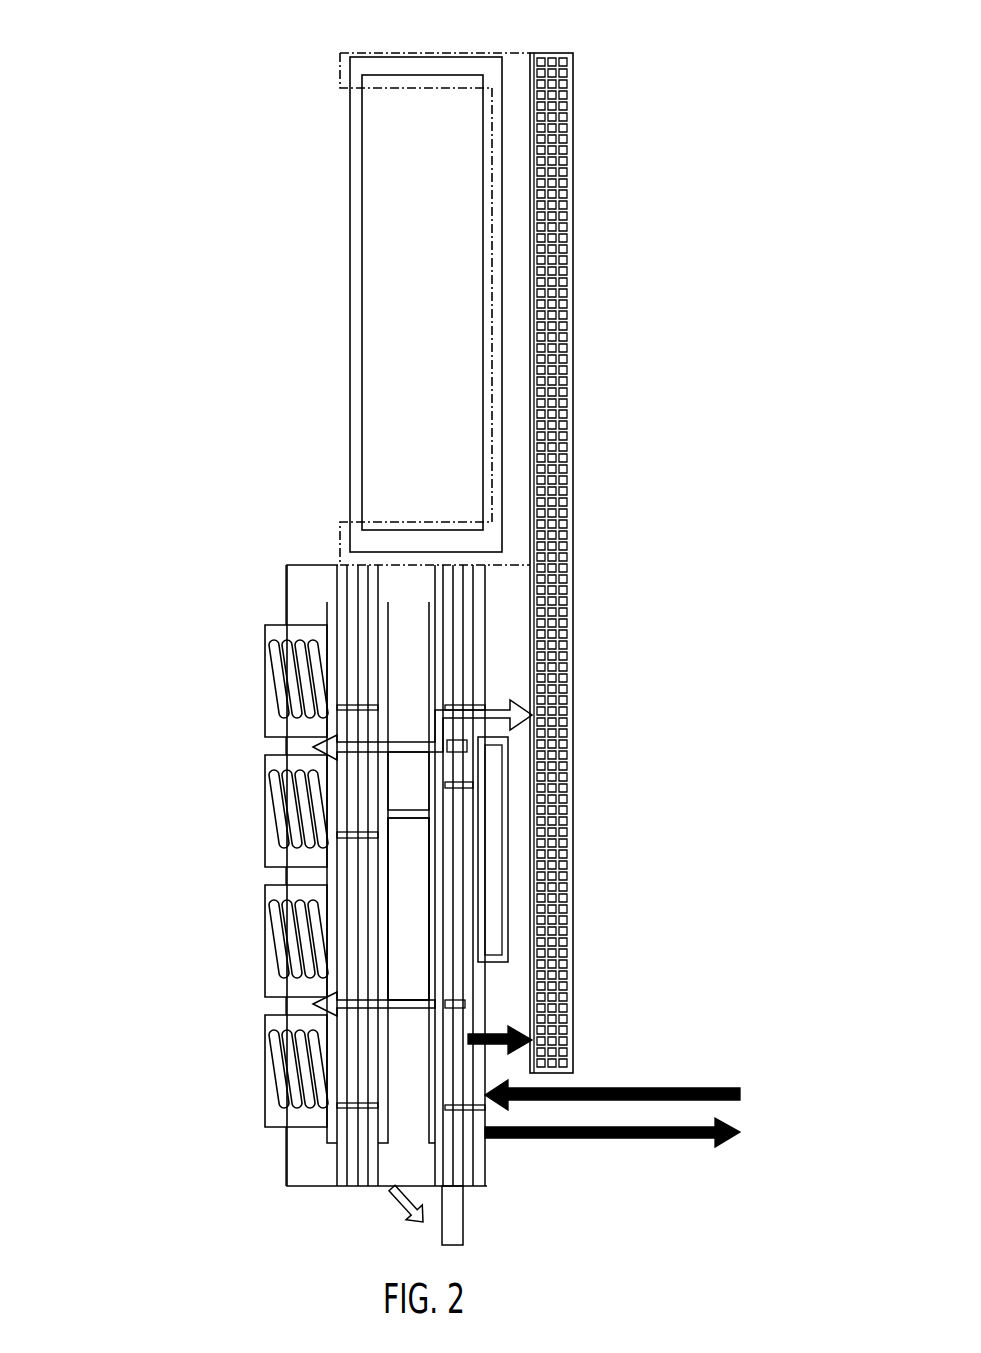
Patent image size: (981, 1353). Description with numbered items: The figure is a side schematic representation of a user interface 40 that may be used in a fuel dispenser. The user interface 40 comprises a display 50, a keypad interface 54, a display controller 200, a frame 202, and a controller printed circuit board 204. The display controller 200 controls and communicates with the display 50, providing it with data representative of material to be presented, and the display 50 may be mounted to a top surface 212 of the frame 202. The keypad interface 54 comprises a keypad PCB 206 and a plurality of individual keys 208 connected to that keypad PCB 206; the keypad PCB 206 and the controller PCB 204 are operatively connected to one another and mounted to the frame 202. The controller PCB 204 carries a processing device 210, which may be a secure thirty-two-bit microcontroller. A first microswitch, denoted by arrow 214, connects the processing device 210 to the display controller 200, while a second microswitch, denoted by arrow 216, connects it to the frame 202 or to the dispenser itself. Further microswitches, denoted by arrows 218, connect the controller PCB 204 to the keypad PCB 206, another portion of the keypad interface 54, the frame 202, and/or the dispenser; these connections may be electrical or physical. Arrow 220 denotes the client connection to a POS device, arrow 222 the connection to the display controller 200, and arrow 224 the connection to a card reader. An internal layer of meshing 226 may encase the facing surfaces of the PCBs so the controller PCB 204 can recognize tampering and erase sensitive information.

The user interface 40 is at (142, 383).
The display 50 is at (380, 186).
The keypad interface 54 is at (232, 762).
The display controller 200 is at (562, 135).
The frame 202 is at (306, 1172).
The controller printed circuit board 204 is at (481, 1172).
The keypad PCB 206 is at (356, 1188).
The keys 208 is at (272, 640).
The processing device 210 is at (496, 887).
The top surface 212 is at (444, 53).
The first microswitch 214 is at (496, 710).
The second microswitch 216 is at (432, 1190).
The microswitches 218 is at (407, 753).
The connection to POS device 220 is at (668, 1088).
The connection to display controller 222 is at (512, 1030).
The connection to card reader 224 is at (692, 1138).
The meshing 226 is at (429, 896).